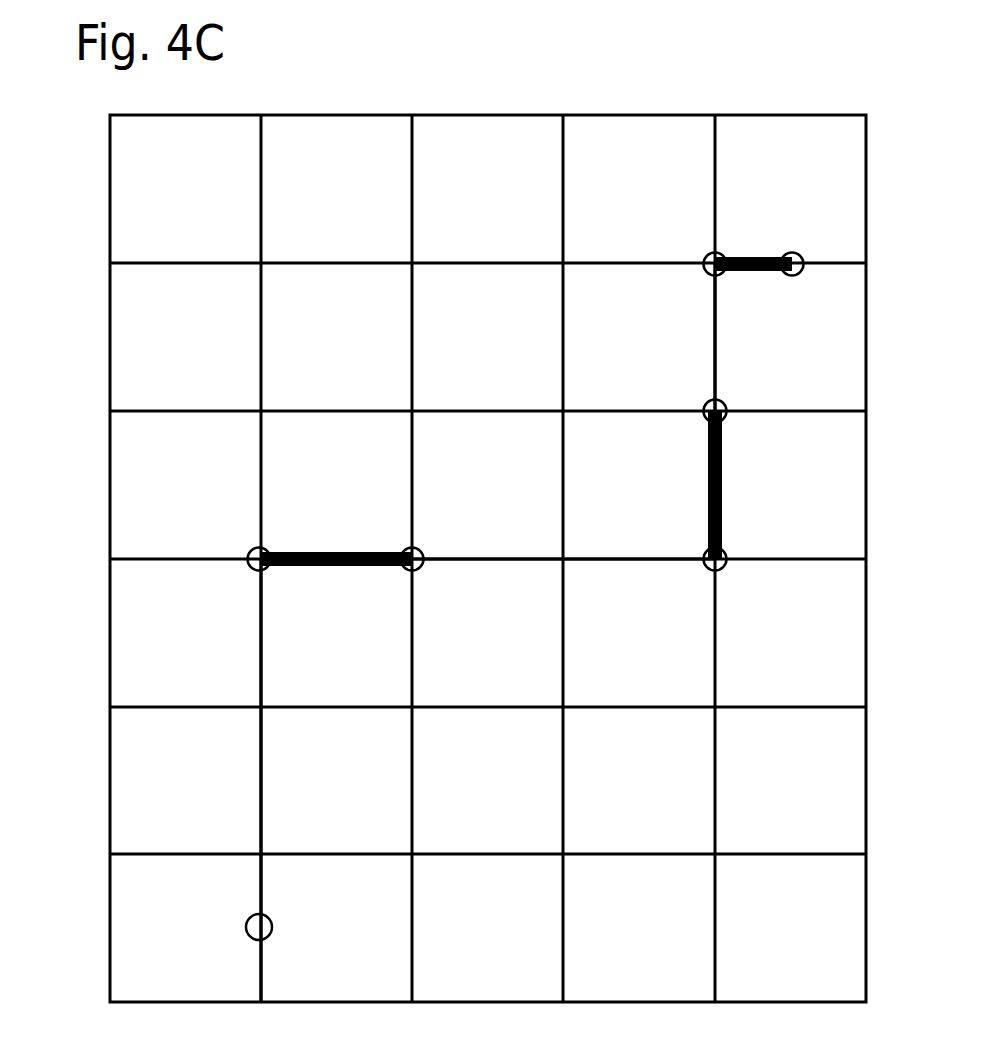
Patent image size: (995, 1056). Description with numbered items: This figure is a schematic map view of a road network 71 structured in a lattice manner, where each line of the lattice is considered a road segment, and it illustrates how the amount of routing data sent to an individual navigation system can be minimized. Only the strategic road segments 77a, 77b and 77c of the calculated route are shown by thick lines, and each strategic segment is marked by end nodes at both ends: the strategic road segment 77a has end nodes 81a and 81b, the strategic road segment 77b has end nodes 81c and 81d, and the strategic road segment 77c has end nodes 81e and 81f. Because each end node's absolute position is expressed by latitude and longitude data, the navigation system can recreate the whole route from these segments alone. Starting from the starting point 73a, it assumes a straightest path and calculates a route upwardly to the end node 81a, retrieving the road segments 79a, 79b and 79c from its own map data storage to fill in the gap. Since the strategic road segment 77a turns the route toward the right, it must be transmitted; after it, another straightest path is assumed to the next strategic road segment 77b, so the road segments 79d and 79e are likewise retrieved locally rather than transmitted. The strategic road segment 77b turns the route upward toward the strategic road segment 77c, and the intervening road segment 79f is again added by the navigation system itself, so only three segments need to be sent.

The road network 71 is at (108, 352).
The starting point 73a is at (250, 936).
The road segment 79a is at (262, 890).
The road segment 79b is at (262, 745).
The road segment 79c is at (262, 613).
The road segment 79d is at (462, 565).
The road segment 79e is at (617, 565).
The road segment 79f is at (718, 335).
The strategic road segment 77a is at (352, 553).
The strategic road segment 77b is at (707, 480).
The strategic road segment 77c is at (752, 272).
The end node 81a is at (250, 568).
The end node 81b is at (421, 549).
The end node 81c is at (724, 569).
The end node 81d is at (705, 420).
The end node 81e is at (705, 273).
The end node 81f is at (792, 252).